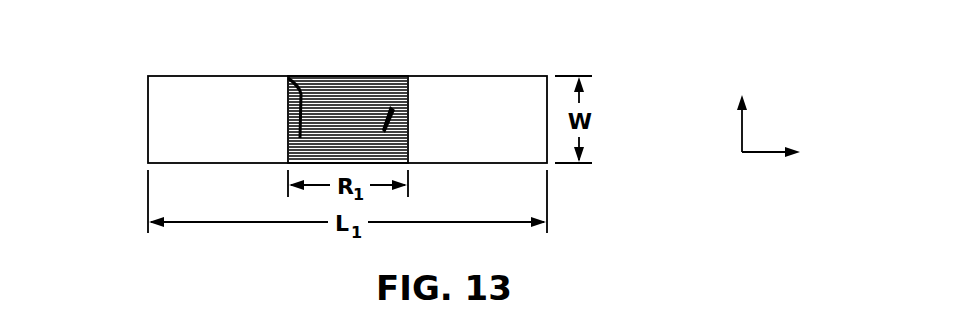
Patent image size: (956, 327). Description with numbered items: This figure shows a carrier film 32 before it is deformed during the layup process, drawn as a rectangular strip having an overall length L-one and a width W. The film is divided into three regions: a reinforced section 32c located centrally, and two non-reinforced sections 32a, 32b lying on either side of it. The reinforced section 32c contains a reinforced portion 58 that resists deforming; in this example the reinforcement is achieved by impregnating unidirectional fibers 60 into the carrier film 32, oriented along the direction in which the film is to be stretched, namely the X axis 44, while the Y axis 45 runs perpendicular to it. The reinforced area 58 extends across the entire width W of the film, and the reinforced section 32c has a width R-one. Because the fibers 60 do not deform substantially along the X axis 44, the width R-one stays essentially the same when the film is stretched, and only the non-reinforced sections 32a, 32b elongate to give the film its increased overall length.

The carrier film 32 is at (124, 118).
The non-reinforced section 32a is at (193, 107).
The non-reinforced section 32b is at (498, 107).
The reinforced section 32c is at (288, 70).
The reinforced portion 58 is at (408, 98).
The unidirectional fibers 60 is at (288, 78).
The X axis 44 is at (763, 157).
The Y axis 45 is at (741, 130).